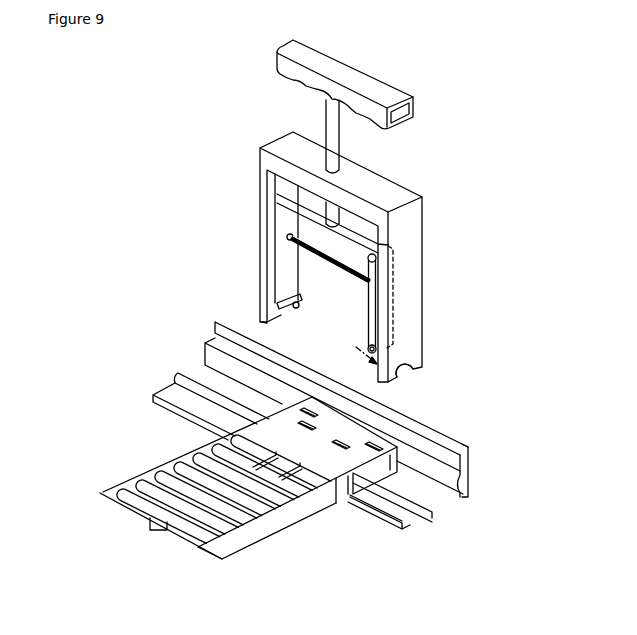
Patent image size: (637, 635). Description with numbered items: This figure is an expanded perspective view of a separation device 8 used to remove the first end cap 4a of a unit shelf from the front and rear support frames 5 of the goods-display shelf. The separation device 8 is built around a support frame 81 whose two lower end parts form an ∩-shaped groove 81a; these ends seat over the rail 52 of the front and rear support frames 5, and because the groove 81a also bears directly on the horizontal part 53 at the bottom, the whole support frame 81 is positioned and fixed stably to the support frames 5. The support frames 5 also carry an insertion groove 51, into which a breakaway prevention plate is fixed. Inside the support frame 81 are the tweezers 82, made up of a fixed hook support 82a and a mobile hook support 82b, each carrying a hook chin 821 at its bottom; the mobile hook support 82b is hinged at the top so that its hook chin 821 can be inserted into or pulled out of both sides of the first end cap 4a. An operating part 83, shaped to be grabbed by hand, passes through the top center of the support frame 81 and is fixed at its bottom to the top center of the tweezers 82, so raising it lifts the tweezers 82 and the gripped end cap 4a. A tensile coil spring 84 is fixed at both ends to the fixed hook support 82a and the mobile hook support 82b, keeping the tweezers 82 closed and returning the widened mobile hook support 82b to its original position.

The separation device 8 is at (312, 224).
The support frame 81 is at (371, 270).
The ∩-shaped groove 81a is at (408, 372).
The tweezers 82 is at (305, 269).
The fixed hook support 82a is at (288, 273).
The mobile hook support 82b is at (372, 316).
The hook chin 821 is at (371, 351).
The operating part 83 is at (416, 127).
The tensile spring 84 is at (324, 264).
The No.1 end cap 4a is at (282, 433).
The front and rear support frames 5 is at (311, 440).
The insertion groove 51 is at (460, 498).
The rail 52 is at (413, 500).
The horizontal part 53 is at (418, 519).